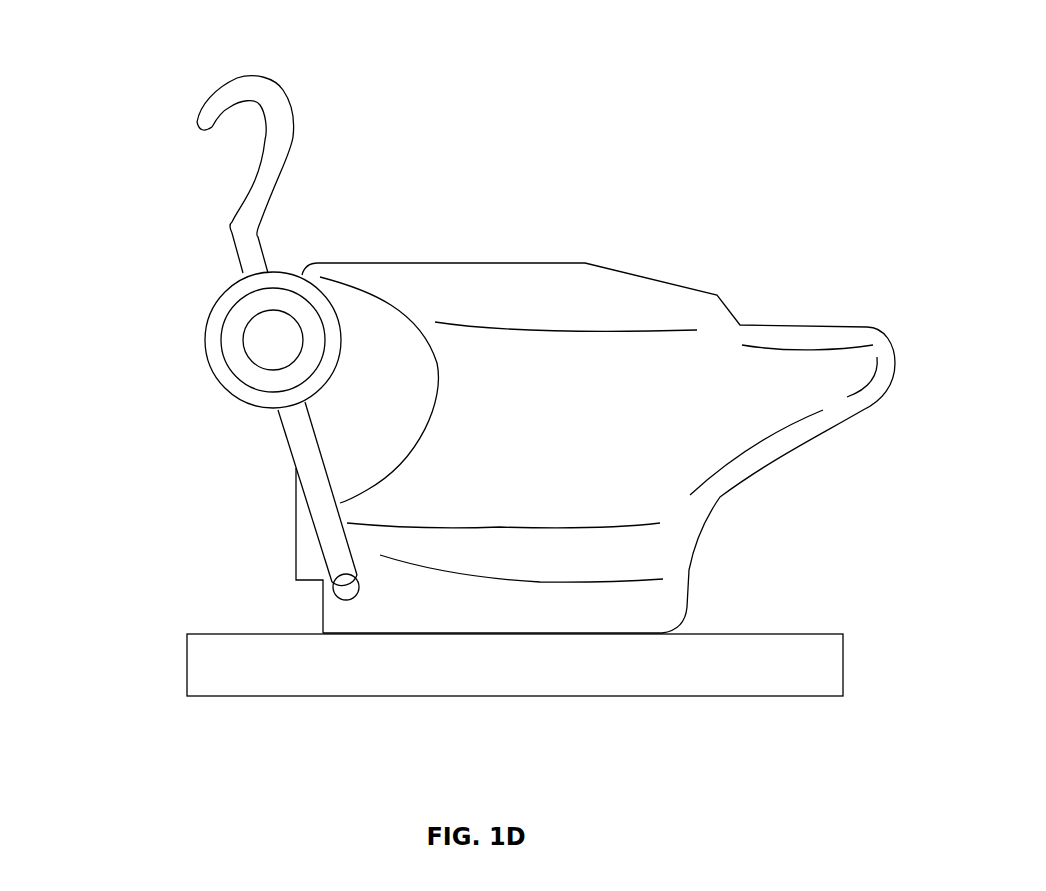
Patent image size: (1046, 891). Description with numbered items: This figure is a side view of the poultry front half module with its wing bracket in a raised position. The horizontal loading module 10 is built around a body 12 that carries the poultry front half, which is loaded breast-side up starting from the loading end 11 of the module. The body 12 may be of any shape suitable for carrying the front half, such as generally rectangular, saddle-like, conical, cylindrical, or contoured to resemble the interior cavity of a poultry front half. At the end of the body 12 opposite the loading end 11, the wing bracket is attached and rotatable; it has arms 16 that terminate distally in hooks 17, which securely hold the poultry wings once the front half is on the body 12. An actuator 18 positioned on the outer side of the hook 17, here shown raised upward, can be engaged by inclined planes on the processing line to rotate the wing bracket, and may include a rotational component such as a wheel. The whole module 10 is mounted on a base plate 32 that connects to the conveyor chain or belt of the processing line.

The horizontal loading module 10 is at (530, 250).
The loading end 11 is at (847, 302).
The body 12 is at (628, 295).
The arm 16 is at (297, 433).
The hook 17 is at (225, 78).
The actuator 18 is at (205, 337).
The base plate 32 is at (207, 660).